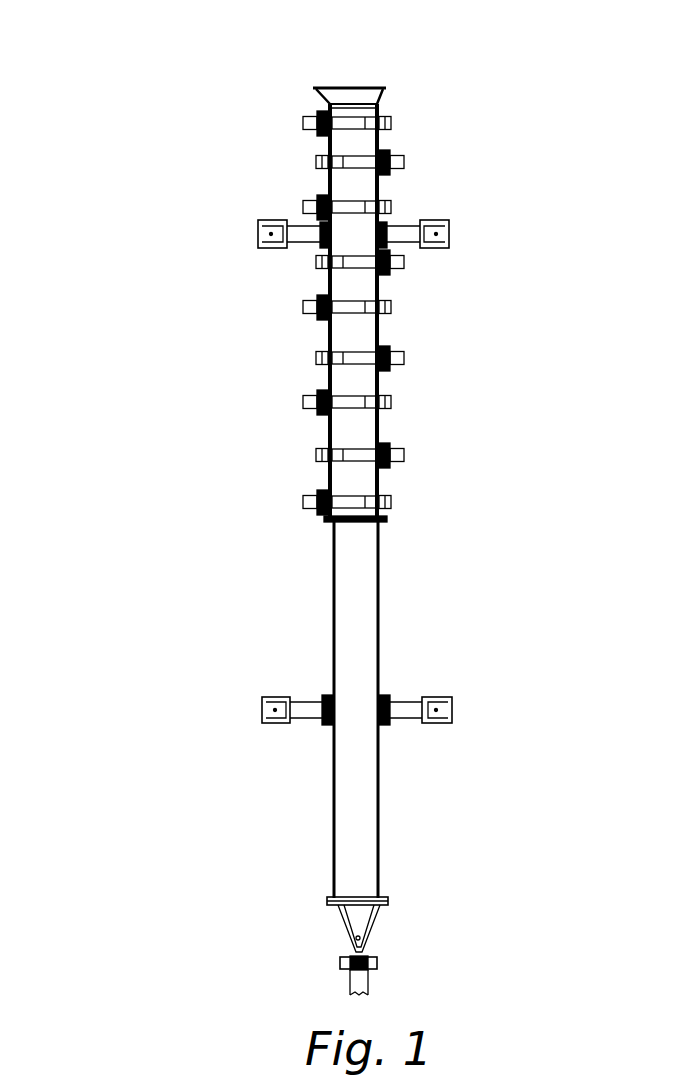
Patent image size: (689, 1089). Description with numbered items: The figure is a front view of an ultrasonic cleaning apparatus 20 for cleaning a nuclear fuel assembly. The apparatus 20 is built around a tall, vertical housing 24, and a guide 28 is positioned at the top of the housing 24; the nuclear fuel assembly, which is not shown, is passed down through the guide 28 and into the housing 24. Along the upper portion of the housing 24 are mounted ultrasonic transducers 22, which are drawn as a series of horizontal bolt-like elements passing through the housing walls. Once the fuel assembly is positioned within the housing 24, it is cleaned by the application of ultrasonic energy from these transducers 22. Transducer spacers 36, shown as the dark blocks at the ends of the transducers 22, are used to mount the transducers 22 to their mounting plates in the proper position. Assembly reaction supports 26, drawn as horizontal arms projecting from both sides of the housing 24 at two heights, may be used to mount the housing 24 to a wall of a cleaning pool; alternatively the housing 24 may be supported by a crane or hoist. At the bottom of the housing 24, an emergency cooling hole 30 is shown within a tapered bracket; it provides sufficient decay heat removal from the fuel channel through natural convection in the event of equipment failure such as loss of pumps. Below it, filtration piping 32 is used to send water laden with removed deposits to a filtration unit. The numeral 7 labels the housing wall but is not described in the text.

The ultrasonic cleaning apparatus 20 is at (128, 82).
The ultrasonic transducers 22 is at (306, 198).
The housing 24 is at (379, 567).
The assembly reaction supports 26 is at (450, 219).
The guide 28 is at (350, 88).
The emergency cooling hole 30 is at (360, 939).
The filtration piping 32 is at (351, 991).
The transducer spacers 36 is at (318, 113).
The column wall 7 is at (330, 376).